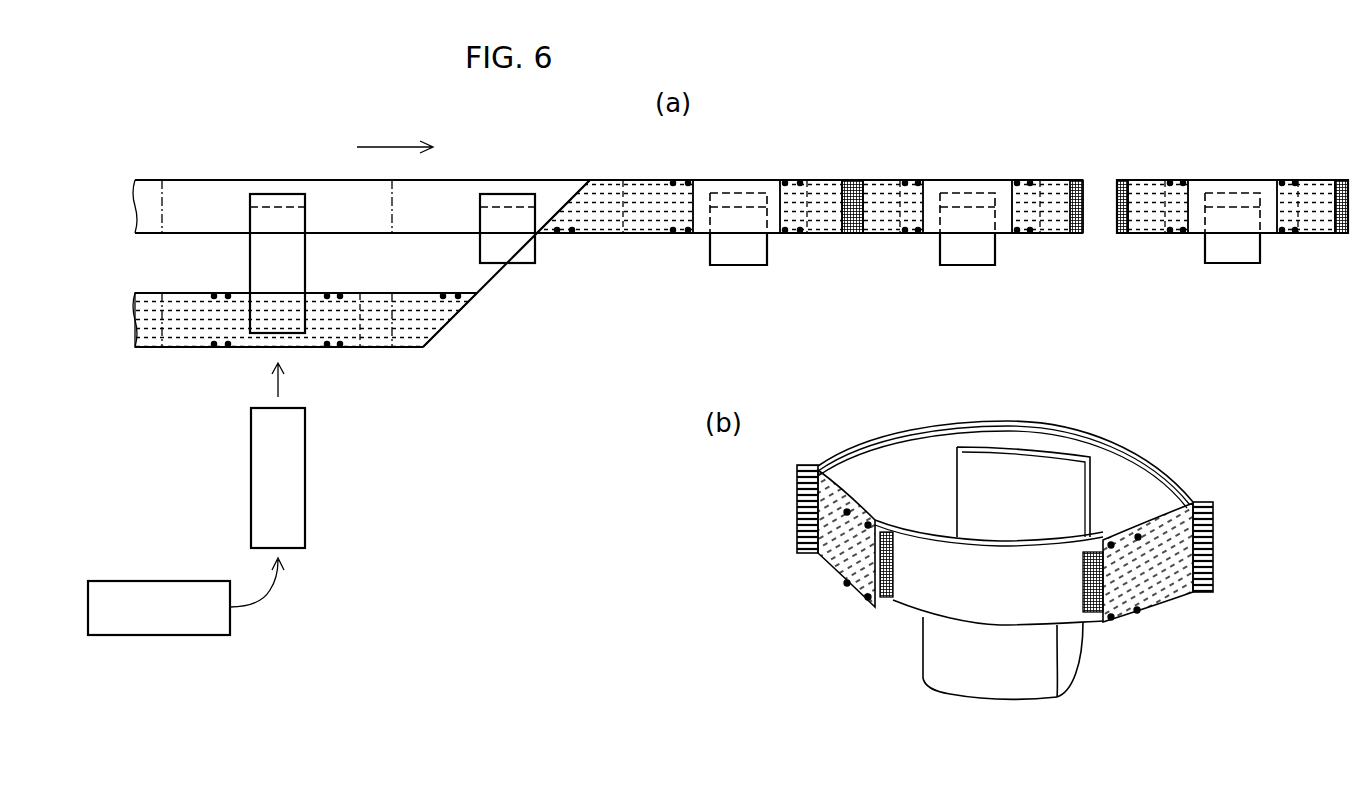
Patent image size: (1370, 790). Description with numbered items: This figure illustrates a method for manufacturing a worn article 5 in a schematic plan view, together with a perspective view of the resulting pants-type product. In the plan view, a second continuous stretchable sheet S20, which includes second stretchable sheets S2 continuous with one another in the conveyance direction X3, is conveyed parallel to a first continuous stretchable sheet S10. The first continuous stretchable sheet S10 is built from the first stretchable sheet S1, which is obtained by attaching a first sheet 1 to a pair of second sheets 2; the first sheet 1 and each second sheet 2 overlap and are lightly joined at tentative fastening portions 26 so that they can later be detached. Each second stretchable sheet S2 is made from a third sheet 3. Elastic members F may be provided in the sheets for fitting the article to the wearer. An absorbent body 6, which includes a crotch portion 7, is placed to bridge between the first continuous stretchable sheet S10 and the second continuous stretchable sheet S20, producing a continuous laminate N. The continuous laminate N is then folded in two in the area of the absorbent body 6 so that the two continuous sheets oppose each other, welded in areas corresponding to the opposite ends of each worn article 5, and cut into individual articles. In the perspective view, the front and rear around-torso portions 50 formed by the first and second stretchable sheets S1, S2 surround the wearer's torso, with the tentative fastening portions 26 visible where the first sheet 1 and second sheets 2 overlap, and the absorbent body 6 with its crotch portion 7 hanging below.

The first sheet 1 is at (957, 190).
The second sheet 2 is at (915, 182).
The third sheet 3 is at (1134, 501).
The worn article 5 is at (1252, 131).
The absorbent body 6 is at (276, 200).
The crotch portion 7 is at (1244, 268).
The tentative fastening portion 26 is at (228, 294).
The around-torso portion 50 is at (1015, 437).
The first stretchable sheet S1 is at (1008, 108).
The second stretchable sheet S2 is at (1134, 501).
The first continuous stretchable sheet S10 is at (190, 349).
The second continuous stretchable sheet S20 is at (215, 182).
The continuous laminate N is at (790, 182).
The elastic member F is at (630, 236).
The conveyance direction X3 is at (395, 136).